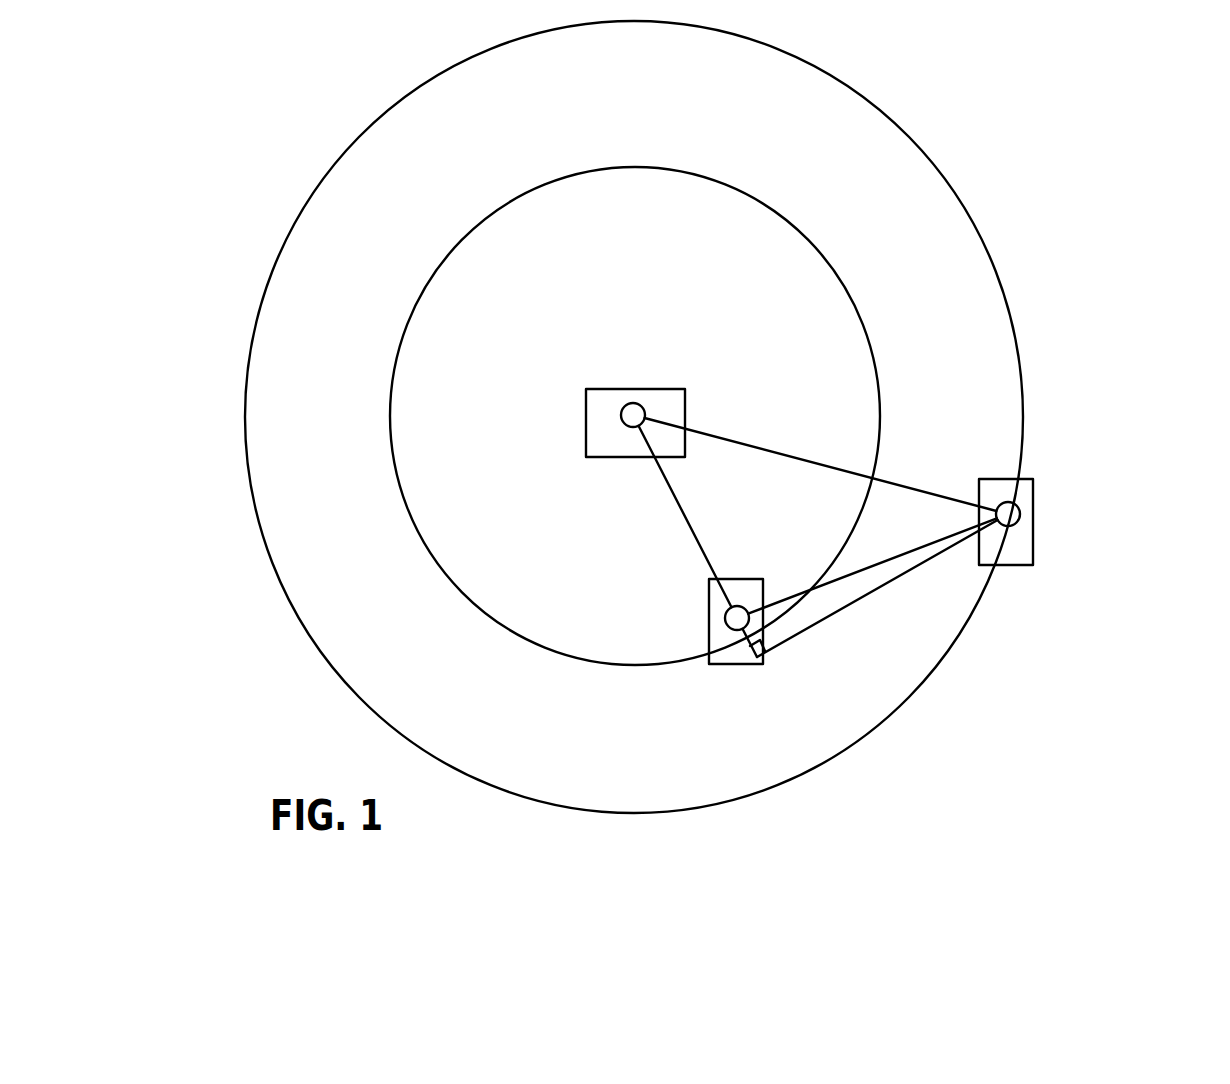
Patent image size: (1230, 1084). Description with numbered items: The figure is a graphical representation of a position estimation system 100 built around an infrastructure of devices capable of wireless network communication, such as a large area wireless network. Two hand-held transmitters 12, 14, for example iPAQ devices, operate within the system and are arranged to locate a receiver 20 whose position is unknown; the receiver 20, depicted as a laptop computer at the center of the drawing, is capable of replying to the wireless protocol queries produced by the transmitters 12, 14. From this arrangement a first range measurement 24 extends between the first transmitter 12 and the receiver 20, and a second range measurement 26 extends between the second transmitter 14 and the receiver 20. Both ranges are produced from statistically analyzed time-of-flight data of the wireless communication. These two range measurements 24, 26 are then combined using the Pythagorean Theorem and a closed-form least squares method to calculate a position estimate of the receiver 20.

The position estimation system 100 is at (280, 130).
The receiver 20 is at (686, 394).
The hand-held transmitter 12 is at (709, 616).
The hand-held transmitter 14 is at (1033, 480).
The first range measurement 24 is at (669, 487).
The second range measurement 26 is at (786, 452).